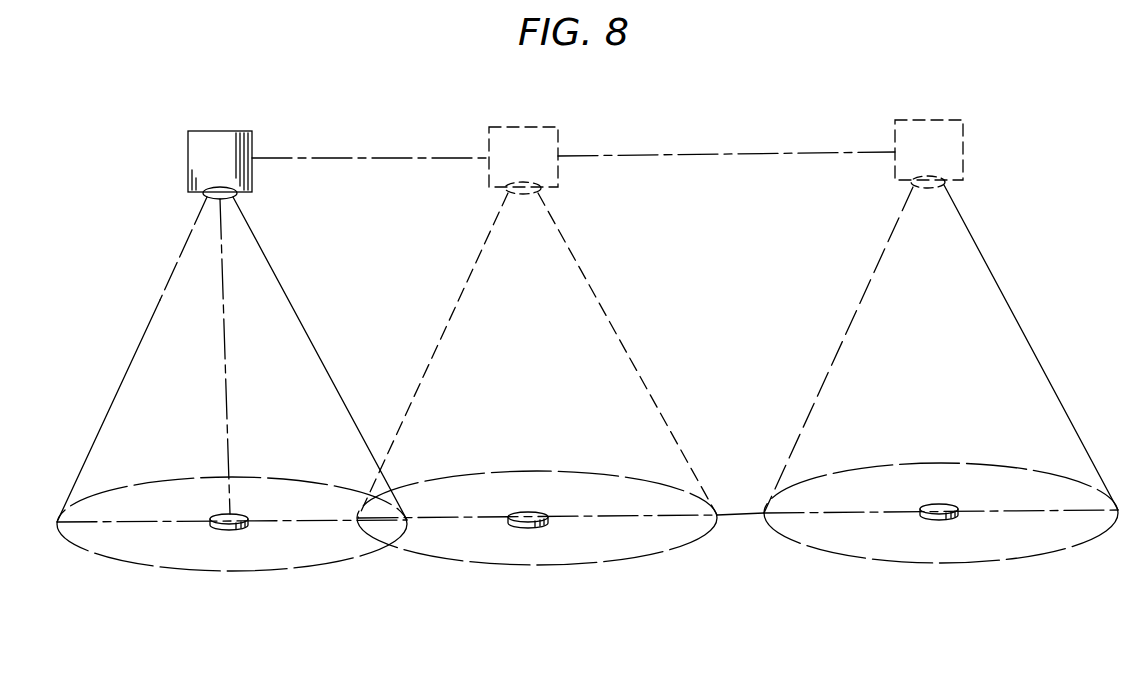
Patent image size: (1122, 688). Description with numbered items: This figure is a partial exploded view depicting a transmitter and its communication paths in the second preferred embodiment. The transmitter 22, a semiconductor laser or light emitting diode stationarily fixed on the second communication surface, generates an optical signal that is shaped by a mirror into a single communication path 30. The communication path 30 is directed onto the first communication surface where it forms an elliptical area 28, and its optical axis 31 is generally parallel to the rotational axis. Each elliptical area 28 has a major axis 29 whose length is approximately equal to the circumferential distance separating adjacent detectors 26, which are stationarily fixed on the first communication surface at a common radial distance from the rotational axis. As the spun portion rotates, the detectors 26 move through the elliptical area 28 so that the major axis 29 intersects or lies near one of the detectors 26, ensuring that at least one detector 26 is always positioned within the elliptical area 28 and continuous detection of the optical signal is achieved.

The transmitter 22 is at (213, 131).
The detector 26 is at (245, 529).
The elliptical area 28 is at (243, 570).
The major axis 29 is at (170, 522).
The communication path 30 is at (160, 300).
The optical axis 31 is at (227, 412).